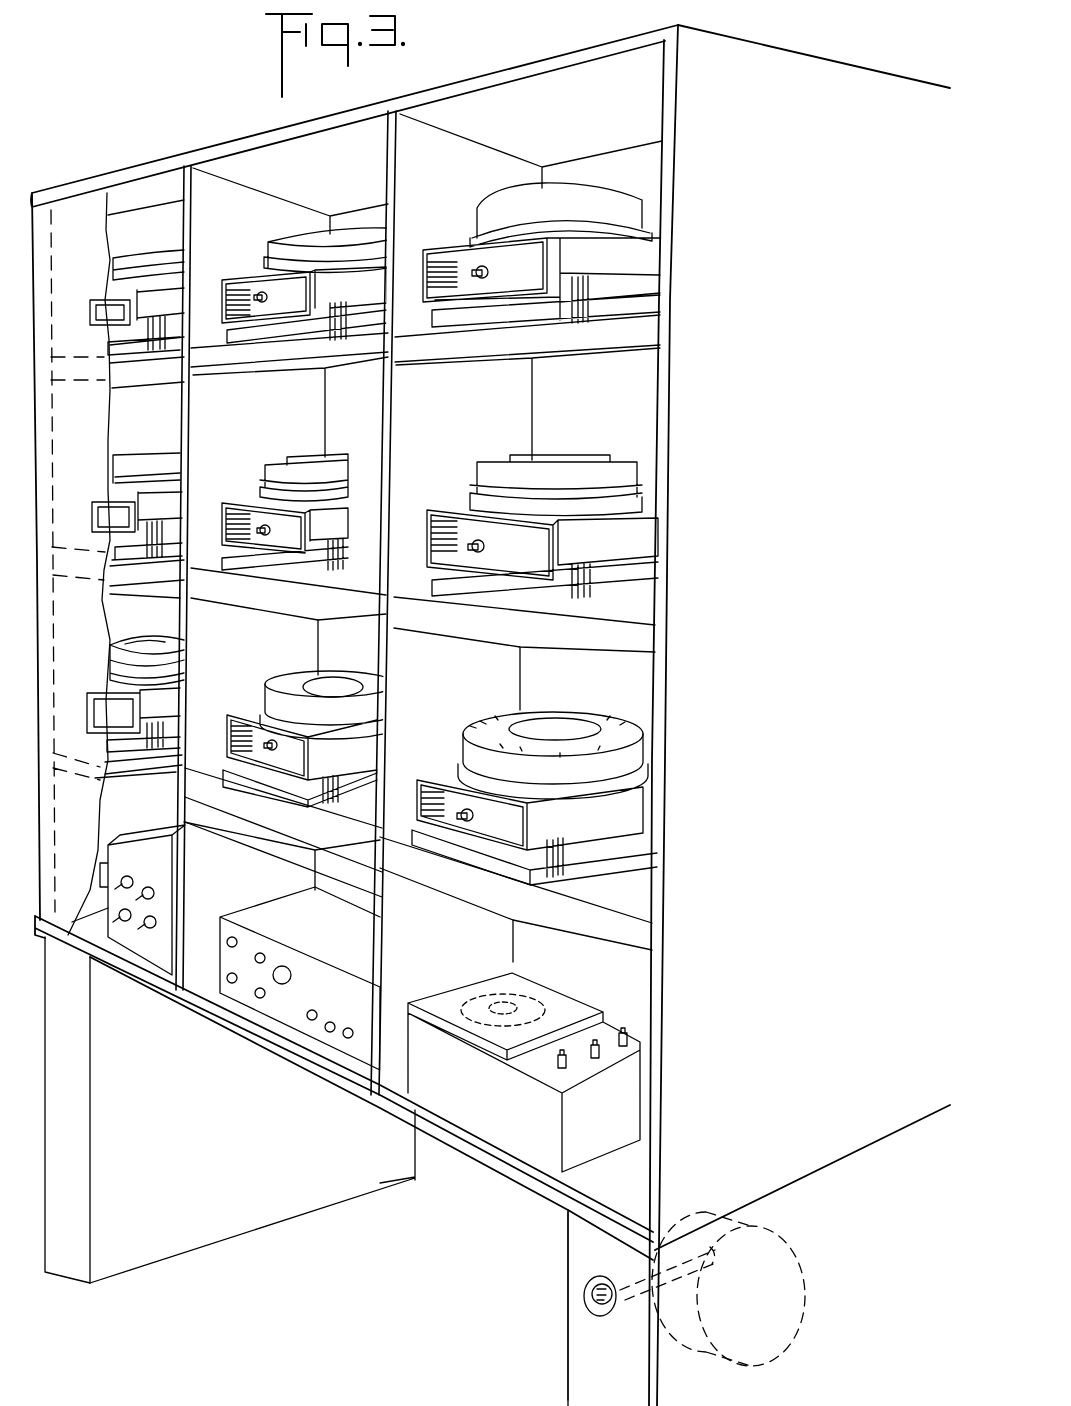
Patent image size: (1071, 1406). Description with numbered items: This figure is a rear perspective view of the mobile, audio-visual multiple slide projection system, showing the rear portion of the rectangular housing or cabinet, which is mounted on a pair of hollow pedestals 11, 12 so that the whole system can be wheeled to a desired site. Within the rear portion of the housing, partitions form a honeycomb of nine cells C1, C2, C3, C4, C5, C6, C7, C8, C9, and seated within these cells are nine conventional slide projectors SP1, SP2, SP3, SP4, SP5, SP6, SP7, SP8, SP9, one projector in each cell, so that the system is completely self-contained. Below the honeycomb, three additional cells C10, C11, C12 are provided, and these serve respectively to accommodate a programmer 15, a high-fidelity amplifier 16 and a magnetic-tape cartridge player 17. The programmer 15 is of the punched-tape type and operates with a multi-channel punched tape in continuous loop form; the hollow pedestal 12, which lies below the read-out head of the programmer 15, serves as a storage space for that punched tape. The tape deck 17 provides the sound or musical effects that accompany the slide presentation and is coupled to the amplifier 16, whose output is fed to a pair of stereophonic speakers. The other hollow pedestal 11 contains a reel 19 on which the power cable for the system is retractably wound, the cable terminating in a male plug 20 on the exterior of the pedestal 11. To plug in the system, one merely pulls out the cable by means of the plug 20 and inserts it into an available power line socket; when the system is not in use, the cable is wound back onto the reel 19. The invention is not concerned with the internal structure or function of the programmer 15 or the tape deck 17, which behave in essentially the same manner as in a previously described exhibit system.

The cell C1 is at (148, 195).
The cell C2 is at (318, 152).
The cell C3 is at (556, 90).
The cell C4 is at (165, 418).
The cell C5 is at (300, 416).
The cell C6 is at (500, 420).
The cell C7 is at (155, 626).
The cell C8 is at (292, 651).
The cell C9 is at (490, 681).
The additional cell C10 is at (150, 816).
The additional cell C11 is at (276, 866).
The additional cell C12 is at (471, 941).
The slide projector SP1 is at (147, 268).
The slide projector SP2 is at (285, 250).
The slide projector SP3 is at (495, 205).
The slide projector SP4 is at (140, 468).
The slide projector SP5 is at (292, 480).
The slide projector SP6 is at (495, 478).
The slide projector SP7 is at (112, 665).
The slide projector SP8 is at (262, 682).
The slide projector SP9 is at (472, 722).
The hollow pedestal 11 is at (573, 1262).
The hollow pedestal 12 is at (320, 1185).
The programmer 15 is at (145, 940).
The high-fidelity amplifier 16 is at (290, 910).
The magnetic-tape cartridge player 17 is at (482, 1105).
The reel 19 is at (812, 1292).
The male plug 20 is at (588, 1299).